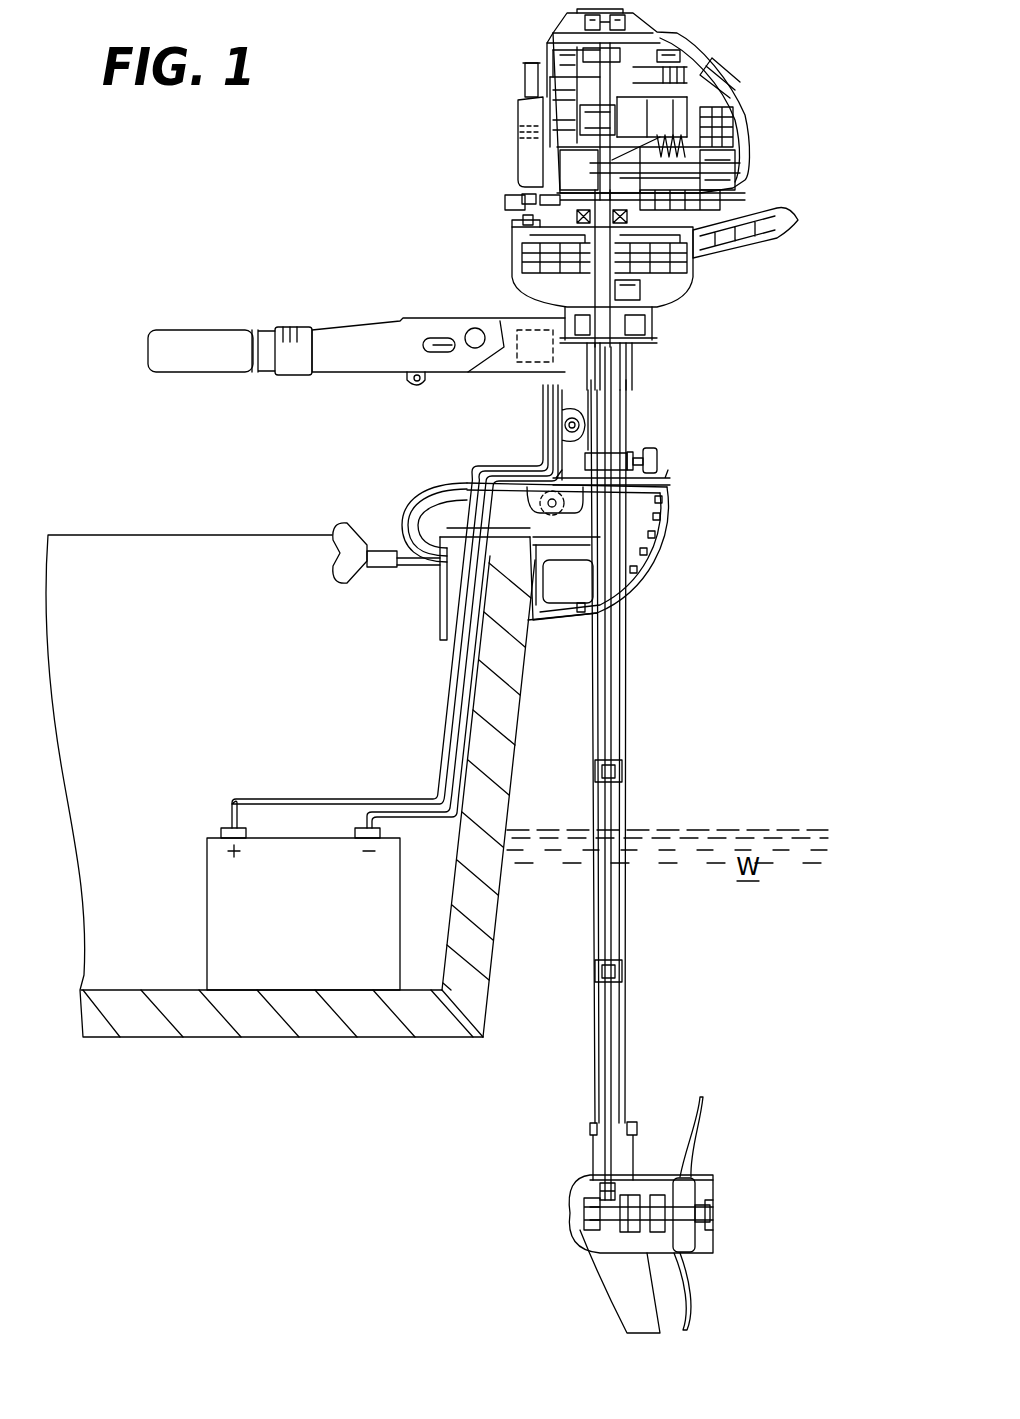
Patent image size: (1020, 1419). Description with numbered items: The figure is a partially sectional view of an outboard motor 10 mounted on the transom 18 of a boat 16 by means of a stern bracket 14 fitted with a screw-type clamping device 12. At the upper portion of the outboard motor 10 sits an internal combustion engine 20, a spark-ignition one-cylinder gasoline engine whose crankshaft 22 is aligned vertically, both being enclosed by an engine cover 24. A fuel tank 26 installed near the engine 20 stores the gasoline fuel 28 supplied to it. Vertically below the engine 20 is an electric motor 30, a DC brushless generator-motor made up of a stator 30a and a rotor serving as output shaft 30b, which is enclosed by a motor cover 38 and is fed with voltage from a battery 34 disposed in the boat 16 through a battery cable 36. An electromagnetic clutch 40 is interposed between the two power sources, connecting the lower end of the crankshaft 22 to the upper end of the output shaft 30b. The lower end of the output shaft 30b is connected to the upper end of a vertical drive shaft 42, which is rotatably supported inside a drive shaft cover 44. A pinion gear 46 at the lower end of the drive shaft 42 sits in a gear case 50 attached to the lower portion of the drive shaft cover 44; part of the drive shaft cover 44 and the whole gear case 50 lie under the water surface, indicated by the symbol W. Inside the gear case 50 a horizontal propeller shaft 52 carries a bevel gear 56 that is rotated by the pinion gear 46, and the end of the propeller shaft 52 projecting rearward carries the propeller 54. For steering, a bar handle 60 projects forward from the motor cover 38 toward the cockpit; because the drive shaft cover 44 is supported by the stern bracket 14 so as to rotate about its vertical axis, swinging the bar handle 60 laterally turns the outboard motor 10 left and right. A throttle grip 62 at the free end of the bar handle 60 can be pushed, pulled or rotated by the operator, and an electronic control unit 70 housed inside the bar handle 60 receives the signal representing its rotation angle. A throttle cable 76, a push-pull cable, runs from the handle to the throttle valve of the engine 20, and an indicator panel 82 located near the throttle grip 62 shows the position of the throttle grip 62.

The outboard motor 10 is at (737, 60).
The screw-type clamping device 12 is at (383, 577).
The stern bracket 14 is at (462, 482).
The boat 16 is at (183, 667).
The transom 18 is at (517, 708).
The internal combustion engine 20 is at (730, 98).
The crankshaft 22 is at (748, 187).
The engine cover 24 is at (688, 25).
The fuel tank 26 is at (522, 102).
The gasoline fuel 28 is at (523, 148).
The electric motor 30 is at (598, 290).
The stator 30a is at (522, 221).
The output shaft 30b is at (637, 290).
The battery 34 is at (321, 929).
The battery cable 36 is at (452, 682).
The motor cover 38 is at (670, 290).
The electromagnetic clutch 40 is at (527, 197).
The drive shaft 42 is at (612, 810).
The drive shaft cover 44 is at (623, 728).
The pinion gear 46 is at (610, 1225).
The gear case 50 is at (580, 1198).
The propeller shaft 52 is at (620, 1215).
The propeller 54 is at (697, 1153).
The bevel gear 56 is at (593, 1187).
The bar handle 60 is at (356, 340).
The throttle grip 62 is at (190, 338).
The electronic control unit 70 is at (527, 383).
The throttle cable 76 is at (442, 353).
The indicator panel 82 is at (293, 315).